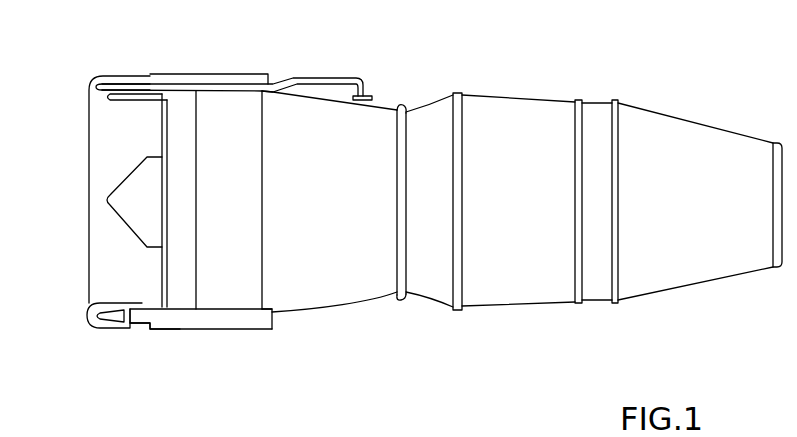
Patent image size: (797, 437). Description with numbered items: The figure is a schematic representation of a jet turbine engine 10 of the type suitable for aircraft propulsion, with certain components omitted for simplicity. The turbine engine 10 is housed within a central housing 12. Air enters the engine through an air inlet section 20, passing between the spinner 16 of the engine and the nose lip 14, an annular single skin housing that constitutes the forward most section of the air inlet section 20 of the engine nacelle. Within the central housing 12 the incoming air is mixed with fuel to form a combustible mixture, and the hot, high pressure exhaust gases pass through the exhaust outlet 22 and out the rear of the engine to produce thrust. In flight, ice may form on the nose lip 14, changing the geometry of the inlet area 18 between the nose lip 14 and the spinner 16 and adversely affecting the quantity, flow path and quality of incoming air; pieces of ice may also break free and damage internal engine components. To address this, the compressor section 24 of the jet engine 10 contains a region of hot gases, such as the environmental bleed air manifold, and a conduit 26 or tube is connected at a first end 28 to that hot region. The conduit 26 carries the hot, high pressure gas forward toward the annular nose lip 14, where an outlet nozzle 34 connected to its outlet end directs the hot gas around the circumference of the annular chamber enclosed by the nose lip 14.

The jet turbine engine 10 is at (422, 85).
The central housing 12 is at (523, 303).
The nose lip 14 is at (88, 138).
The spinner 16 is at (139, 216).
The inlet area 18 is at (142, 303).
The air inlet section 20 is at (148, 329).
The exhaust outlet 22 is at (697, 278).
The compressor section 24 is at (327, 308).
The conduit 26 is at (325, 77).
The first end 28 is at (370, 93).
The outlet nozzle 34 is at (118, 80).